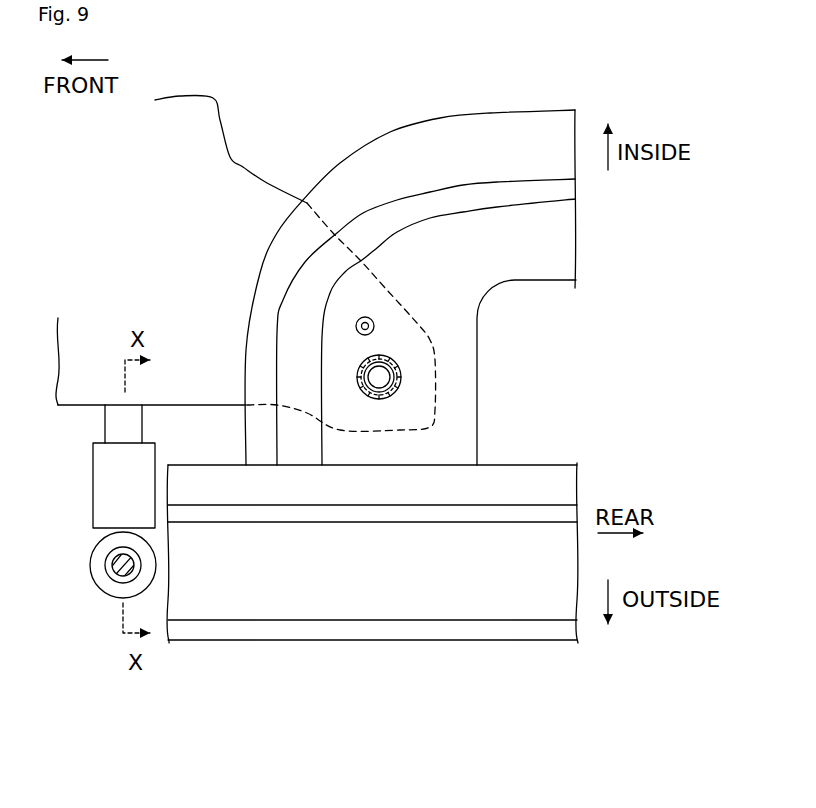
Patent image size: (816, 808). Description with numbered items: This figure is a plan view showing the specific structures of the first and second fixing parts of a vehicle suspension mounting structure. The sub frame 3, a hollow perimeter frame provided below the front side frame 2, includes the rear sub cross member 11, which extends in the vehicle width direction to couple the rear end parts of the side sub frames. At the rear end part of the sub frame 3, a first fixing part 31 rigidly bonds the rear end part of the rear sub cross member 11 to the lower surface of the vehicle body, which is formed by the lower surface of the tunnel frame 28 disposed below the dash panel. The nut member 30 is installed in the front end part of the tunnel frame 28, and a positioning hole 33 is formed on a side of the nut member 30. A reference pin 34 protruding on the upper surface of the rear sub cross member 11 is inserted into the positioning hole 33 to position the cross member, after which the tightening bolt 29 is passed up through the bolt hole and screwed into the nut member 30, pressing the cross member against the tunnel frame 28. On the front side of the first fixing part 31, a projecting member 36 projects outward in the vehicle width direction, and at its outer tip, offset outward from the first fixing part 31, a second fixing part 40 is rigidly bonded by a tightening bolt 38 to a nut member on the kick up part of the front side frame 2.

The front side frame 2 is at (567, 490).
The sub frame 3 is at (242, 176).
The rear sub cross member 11 is at (204, 110).
The tunnel frame 28 is at (389, 127).
The tightening bolt 29 is at (381, 381).
The nut member 30 is at (393, 393).
The first fixing part 31 is at (402, 365).
The positioning hole 33 is at (367, 317).
The reference pin 34 is at (374, 322).
The projecting member 36 is at (92, 472).
The tightening bolt 38 is at (122, 578).
The second fixing part 40 is at (90, 570).